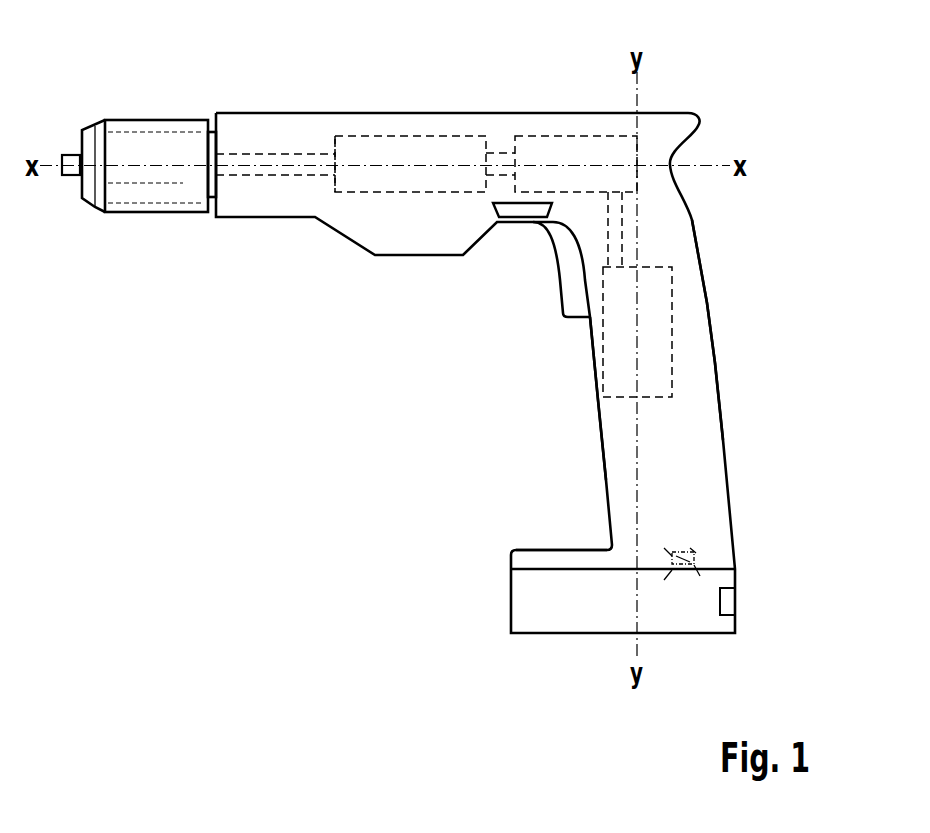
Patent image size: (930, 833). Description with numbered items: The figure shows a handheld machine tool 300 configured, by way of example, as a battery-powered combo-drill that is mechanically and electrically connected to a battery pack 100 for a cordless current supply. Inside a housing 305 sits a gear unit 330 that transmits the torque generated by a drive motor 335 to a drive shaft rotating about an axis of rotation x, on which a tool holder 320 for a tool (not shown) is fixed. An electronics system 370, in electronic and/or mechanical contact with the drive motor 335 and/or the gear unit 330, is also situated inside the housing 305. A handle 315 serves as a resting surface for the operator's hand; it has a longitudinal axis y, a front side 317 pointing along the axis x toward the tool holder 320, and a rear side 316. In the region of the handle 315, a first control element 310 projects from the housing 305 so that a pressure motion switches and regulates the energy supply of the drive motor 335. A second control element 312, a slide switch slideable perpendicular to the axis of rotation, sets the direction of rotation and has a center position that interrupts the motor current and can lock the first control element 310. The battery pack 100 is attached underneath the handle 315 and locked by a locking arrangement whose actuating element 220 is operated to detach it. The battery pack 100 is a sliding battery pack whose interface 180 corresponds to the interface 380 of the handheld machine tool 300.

The handheld machine tool 300 is at (685, 80).
The housing 305 is at (405, 132).
The first control element 310 is at (158, 138).
The second control element 312 is at (522, 212).
The handle 315 is at (690, 305).
The rear side 316 is at (713, 377).
The front side 317 is at (597, 400).
The tool holder 320 is at (70, 155).
The gear unit 330 is at (343, 149).
The drive motor 335 is at (565, 150).
The electronics system 370 is at (660, 362).
The interface 380 is at (702, 543).
The interface 180 is at (693, 560).
The battery pack 100 is at (563, 615).
The actuating element 220 is at (726, 615).